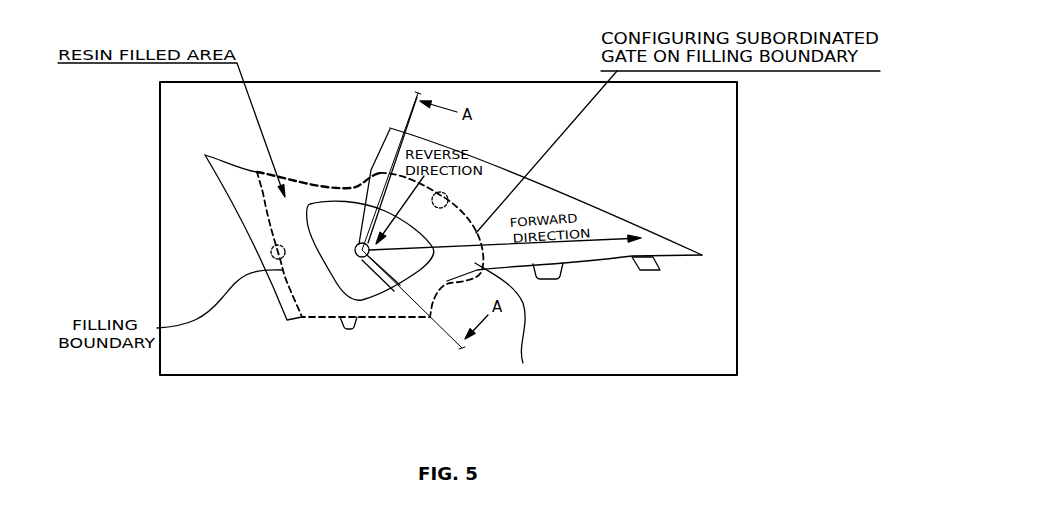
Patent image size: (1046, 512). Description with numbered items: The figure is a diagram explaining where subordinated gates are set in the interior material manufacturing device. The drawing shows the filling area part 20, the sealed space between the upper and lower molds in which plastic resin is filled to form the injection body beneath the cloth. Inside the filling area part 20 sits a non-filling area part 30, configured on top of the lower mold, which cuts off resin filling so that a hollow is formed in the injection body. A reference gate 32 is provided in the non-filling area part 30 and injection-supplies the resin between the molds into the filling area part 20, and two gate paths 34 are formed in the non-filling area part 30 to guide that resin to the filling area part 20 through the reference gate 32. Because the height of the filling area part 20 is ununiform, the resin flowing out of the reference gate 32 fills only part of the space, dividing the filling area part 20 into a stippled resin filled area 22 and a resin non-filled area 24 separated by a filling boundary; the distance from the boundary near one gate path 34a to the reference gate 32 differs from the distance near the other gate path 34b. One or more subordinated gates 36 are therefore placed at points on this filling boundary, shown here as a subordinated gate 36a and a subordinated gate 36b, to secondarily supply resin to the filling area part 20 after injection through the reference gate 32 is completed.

The filling area part 20 is at (390, 129).
The resin filled area 22 is at (523, 363).
The resin non-filled area 24 is at (550, 203).
The non-filling area part 30 is at (362, 282).
The reference gate 32 is at (357, 254).
The gate path 34 is at (365, 234).
The gate path 34a is at (366, 232).
The gate path 34b is at (390, 282).
The subordinated gate 36 is at (331, 168).
The subordinated gate 36a is at (448, 199).
The subordinated gate 36b is at (271, 252).